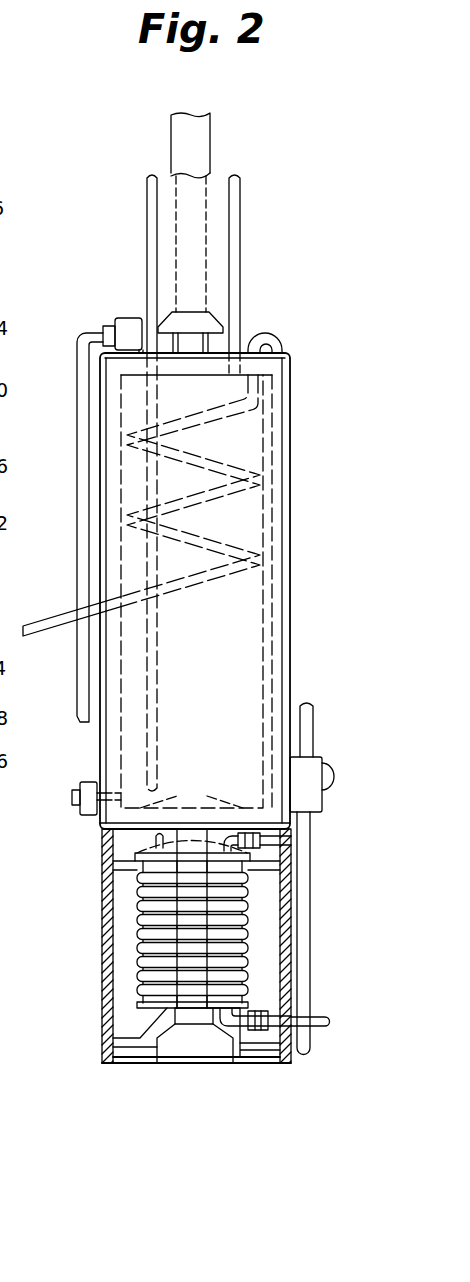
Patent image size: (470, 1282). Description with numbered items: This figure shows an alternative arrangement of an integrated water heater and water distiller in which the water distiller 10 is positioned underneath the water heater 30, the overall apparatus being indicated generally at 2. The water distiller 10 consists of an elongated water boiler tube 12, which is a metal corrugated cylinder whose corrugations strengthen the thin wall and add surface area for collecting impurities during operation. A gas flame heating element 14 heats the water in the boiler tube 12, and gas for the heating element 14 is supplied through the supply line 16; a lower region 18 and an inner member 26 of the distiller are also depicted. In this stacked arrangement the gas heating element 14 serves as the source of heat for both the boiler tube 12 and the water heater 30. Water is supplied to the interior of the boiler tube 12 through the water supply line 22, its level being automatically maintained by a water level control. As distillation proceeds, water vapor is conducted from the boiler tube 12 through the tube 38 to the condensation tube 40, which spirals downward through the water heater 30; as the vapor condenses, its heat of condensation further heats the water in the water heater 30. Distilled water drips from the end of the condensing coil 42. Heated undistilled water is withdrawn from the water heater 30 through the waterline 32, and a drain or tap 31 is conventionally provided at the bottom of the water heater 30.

The cryogenic apparatus housing 2 is at (80, 1041).
The water distiller 10 is at (91, 954).
The water boiler tube 12 is at (145, 903).
The gas flame heating element 14 is at (180, 1047).
The supply line 16 is at (297, 1058).
The bottom block 18 is at (215, 1053).
The water supply line 22 is at (310, 1027).
The inner tube 26 is at (165, 977).
The water heater 30 is at (80, 470).
The drain or tap 31 is at (85, 805).
The waterline 32 is at (233, 262).
The tube 38 is at (291, 847).
The condensation tube 40 is at (260, 478).
The condensing coil end 42 is at (65, 628).